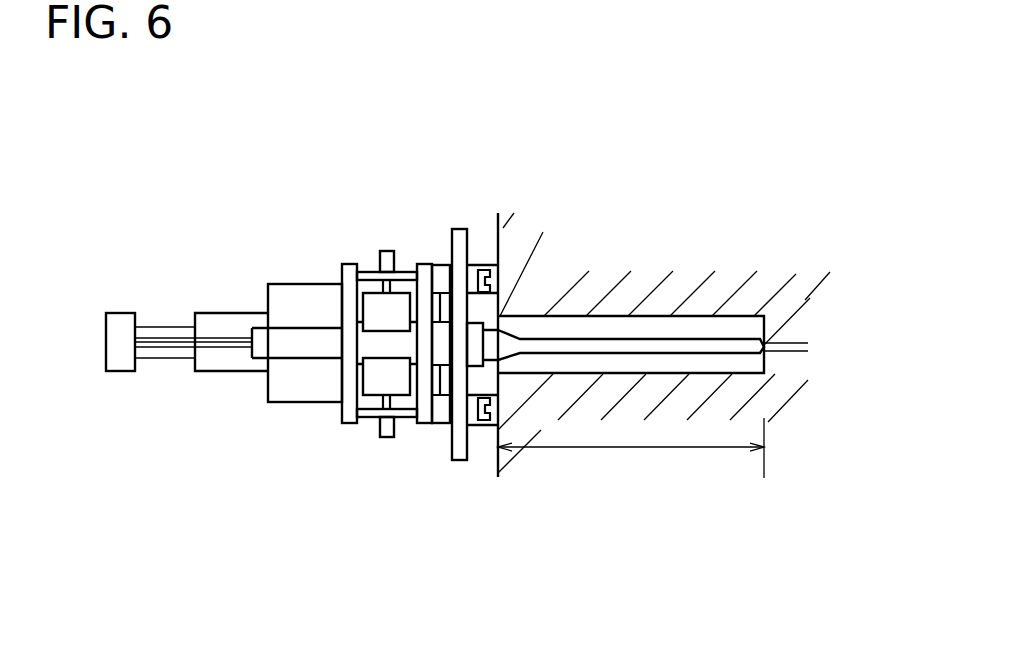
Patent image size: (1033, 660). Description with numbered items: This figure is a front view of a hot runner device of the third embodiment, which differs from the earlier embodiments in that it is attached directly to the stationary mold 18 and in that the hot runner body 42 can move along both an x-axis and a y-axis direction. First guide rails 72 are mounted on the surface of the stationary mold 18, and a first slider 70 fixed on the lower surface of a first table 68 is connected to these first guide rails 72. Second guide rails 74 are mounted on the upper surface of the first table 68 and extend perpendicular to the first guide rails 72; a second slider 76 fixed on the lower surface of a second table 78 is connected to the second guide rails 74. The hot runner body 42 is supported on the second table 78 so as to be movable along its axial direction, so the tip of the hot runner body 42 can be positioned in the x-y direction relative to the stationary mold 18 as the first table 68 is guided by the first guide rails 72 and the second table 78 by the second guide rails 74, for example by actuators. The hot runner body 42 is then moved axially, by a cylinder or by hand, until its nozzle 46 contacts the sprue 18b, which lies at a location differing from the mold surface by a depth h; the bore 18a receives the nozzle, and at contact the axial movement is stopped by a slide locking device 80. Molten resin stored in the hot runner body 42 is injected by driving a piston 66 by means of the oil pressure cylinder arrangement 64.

The stationary mold 18 is at (498, 230).
The bore hole 18a is at (670, 316).
The sprue 18b is at (785, 340).
The hot runner body 42 is at (376, 348).
The nozzle 46 is at (690, 356).
The drive body 64 is at (305, 362).
The piston 66 is at (106, 337).
The first table 68 is at (458, 228).
The first slider 70 is at (478, 425).
The first guide rails 72 is at (491, 425).
The second guide rails 74 is at (452, 228).
The second slider 76 is at (440, 264).
The second table 78 is at (420, 264).
The slide locking device 80 is at (372, 288).